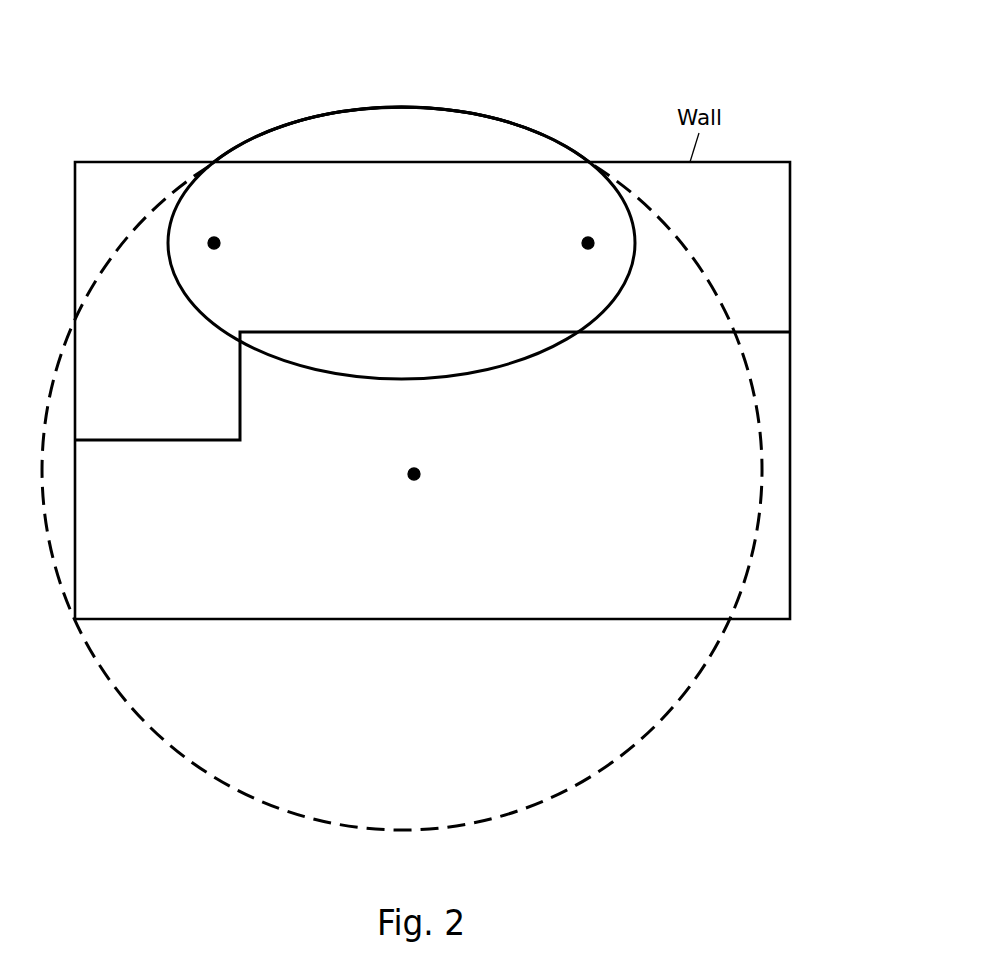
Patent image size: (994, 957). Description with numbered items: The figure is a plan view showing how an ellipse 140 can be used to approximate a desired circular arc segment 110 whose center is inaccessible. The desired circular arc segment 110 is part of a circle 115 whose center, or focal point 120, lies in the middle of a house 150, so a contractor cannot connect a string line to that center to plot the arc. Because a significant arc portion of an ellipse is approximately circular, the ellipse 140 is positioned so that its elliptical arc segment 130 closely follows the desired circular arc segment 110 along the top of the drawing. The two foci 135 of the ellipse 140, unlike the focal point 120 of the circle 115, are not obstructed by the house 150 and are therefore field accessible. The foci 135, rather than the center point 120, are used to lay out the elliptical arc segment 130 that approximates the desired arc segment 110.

The desired circular arc segment 110 is at (320, 116).
The circle 115 is at (198, 765).
The focal point 120 is at (414, 474).
The elliptical arc segment 130 is at (488, 116).
The foci 135 is at (214, 243).
The ellipse 140 is at (532, 358).
The house 150 is at (488, 618).